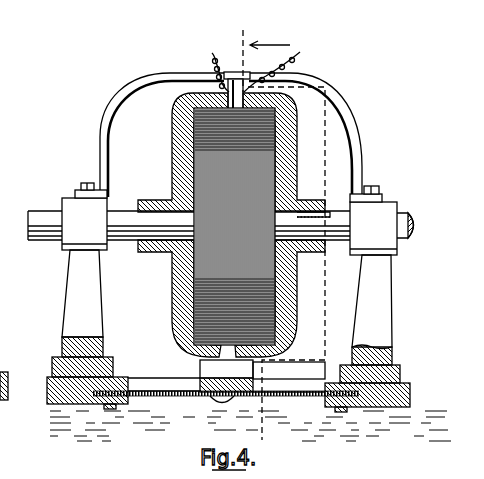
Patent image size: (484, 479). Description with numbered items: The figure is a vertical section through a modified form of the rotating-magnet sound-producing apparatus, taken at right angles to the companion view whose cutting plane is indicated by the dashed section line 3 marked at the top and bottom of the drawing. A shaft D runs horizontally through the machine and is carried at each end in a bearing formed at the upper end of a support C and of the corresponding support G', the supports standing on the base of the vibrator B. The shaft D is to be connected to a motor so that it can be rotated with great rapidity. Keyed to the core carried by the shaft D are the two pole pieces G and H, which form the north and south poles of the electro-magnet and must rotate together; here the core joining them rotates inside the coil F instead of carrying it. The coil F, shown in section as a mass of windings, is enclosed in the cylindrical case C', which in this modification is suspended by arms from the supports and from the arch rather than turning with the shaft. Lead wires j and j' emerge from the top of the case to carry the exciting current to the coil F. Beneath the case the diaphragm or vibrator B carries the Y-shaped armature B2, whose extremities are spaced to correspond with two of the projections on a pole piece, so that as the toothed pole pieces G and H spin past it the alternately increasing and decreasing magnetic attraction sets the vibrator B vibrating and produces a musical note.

The pole piece H is at (292, 167).
The pole piece G is at (234, 155).
The cylindrical case C' is at (231, 298).
The coil F is at (218, 183).
The shaft D is at (46, 199).
The support C is at (82, 293).
The right pedestal G' is at (372, 301).
The vibrator B is at (177, 393).
The Y-shaped armature B2 is at (204, 367).
The lead wire j is at (207, 63).
The lead wire j' is at (283, 62).
The section line 3— 3 is at (281, 230).